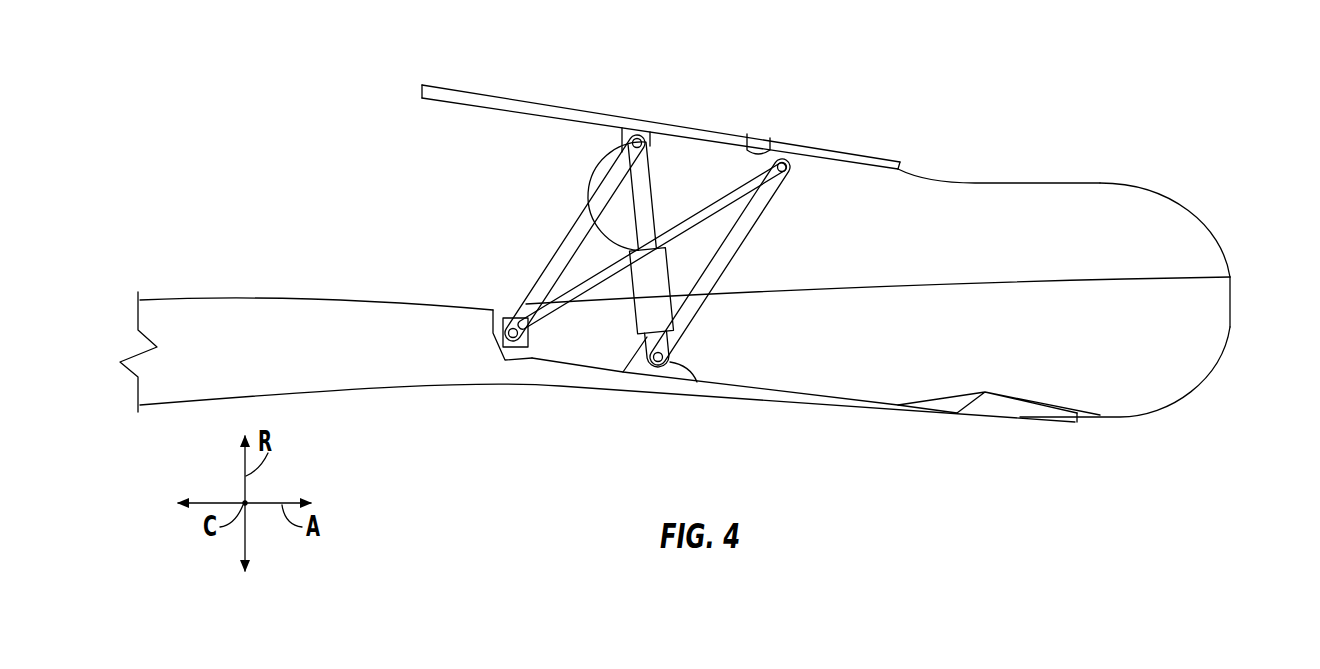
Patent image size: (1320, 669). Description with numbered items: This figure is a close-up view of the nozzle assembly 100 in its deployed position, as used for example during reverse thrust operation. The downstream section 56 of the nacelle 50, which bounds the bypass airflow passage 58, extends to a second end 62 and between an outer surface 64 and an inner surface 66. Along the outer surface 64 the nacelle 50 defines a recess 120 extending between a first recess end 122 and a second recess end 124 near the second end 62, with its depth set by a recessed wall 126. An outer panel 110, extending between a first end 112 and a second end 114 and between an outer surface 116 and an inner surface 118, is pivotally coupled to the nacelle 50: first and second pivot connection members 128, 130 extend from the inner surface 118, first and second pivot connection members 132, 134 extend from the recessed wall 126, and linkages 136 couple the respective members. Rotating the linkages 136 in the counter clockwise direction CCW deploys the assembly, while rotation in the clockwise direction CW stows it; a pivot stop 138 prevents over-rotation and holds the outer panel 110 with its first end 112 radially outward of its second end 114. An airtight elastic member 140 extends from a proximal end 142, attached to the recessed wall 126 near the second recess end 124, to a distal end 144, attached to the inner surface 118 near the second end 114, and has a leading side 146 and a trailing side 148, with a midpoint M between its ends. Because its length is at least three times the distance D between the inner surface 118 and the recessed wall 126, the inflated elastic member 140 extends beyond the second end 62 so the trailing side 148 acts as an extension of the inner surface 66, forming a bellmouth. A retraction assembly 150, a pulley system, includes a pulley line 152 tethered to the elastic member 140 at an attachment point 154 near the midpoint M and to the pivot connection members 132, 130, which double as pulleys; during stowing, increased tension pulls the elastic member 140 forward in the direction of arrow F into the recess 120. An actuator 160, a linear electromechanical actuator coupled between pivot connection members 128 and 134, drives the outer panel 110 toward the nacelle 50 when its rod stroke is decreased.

The nacelle 50 is at (597, 340).
The downstream section 56 is at (268, 203).
The bypass airflow passage 58 is at (444, 462).
The second end 62 is at (1053, 433).
The outer surface 64 is at (325, 290).
The inner surface 66 is at (366, 392).
The nozzle assembly 100 is at (967, 78).
The outer panel 110 is at (657, 95).
The first end 112 is at (424, 76).
The second end 114 is at (896, 145).
The outer surface 116 is at (512, 82).
The inner surface 118 is at (498, 107).
The recess 120 is at (823, 396).
The first recess end 122 is at (495, 305).
The second recess end 124 is at (963, 400).
The recessed wall 126 is at (774, 384).
The first pivot connection member 128 is at (630, 127).
The second pivot connection member 130 is at (748, 142).
The first pivot connection member 132 is at (528, 352).
The second pivot connection member 134 is at (674, 368).
The linkages 136 is at (556, 242).
The pivot stop 138 is at (500, 320).
The elastic member 140 is at (1094, 183).
The proximal end 142 is at (875, 398).
The distal end 144 is at (886, 184).
The leading side 146 is at (1226, 327).
The trailing side 148 is at (1228, 360).
The retraction assembly 150 is at (597, 324).
The pulley line 152 is at (1064, 283).
The attachment point 154 is at (1238, 258).
The actuator 160 is at (659, 305).
The midpoint M is at (1234, 300).
The distance D is at (817, 392).
The arrow F is at (668, 467).
The clockwise direction CW is at (622, 208).
The counter clockwise direction CCW is at (683, 103).